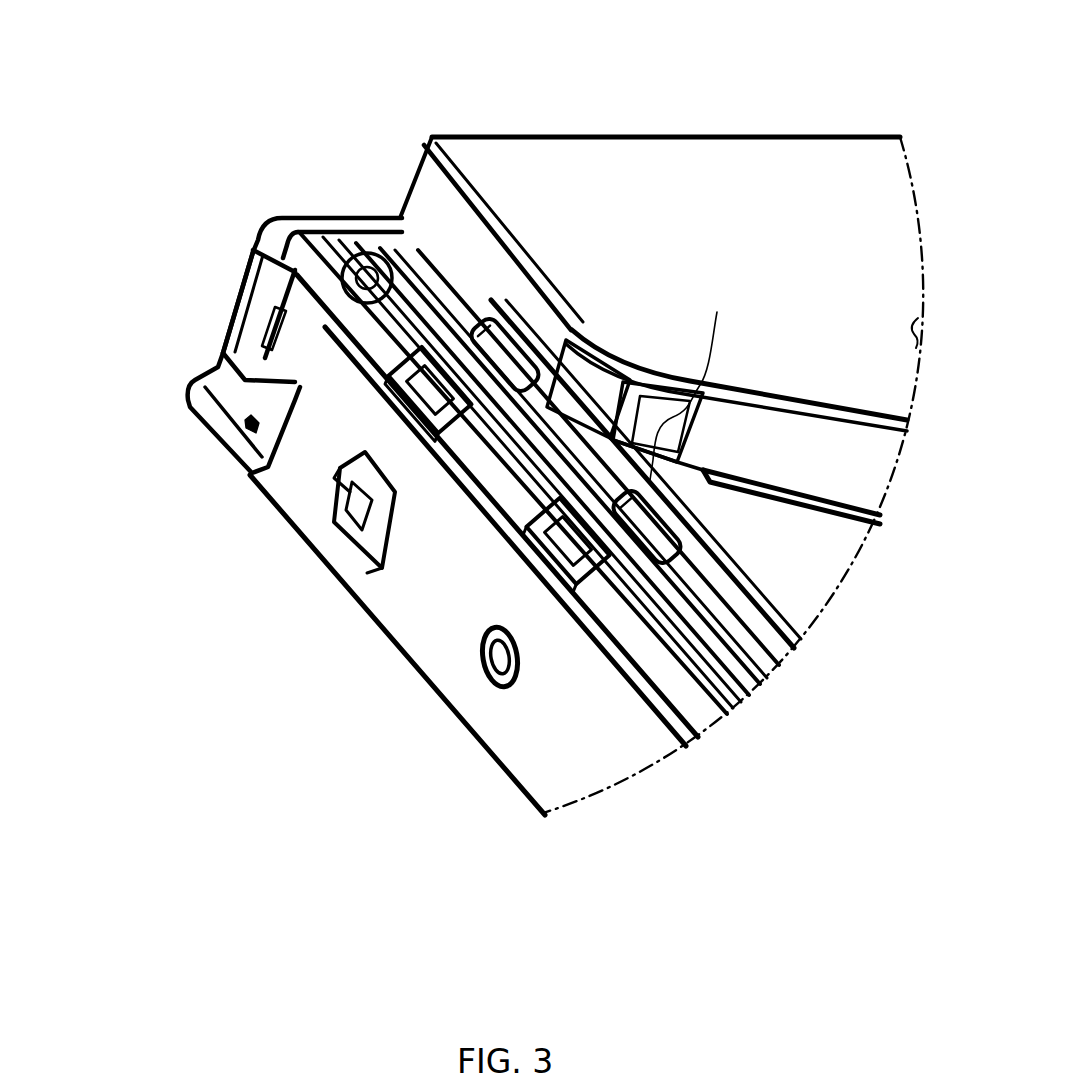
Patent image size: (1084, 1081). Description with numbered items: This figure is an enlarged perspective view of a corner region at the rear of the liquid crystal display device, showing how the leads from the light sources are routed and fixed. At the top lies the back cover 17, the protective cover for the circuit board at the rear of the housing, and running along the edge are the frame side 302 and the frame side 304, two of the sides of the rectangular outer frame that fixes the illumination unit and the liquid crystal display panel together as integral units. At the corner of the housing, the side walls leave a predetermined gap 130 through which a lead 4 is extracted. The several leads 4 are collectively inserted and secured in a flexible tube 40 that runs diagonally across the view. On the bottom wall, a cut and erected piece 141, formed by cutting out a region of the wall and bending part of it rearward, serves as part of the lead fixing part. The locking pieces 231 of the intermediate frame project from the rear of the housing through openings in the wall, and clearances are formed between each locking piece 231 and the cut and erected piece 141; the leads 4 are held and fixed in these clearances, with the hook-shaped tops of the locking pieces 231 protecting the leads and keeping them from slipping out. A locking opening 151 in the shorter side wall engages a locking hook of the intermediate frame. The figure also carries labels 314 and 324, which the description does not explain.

The back cover 17 is at (747, 163).
The frame side 302 is at (328, 217).
The gap 130 is at (206, 333).
The frame side 304 is at (613, 750).
The lead 4 is at (787, 630).
The tube 40 is at (430, 310).
The cut and erected piece 141 is at (577, 324).
The locking piece 231 is at (560, 583).
The locking opening 151 is at (353, 520).
The clip hole 314 is at (367, 573).
The eyelet 324 is at (473, 633).